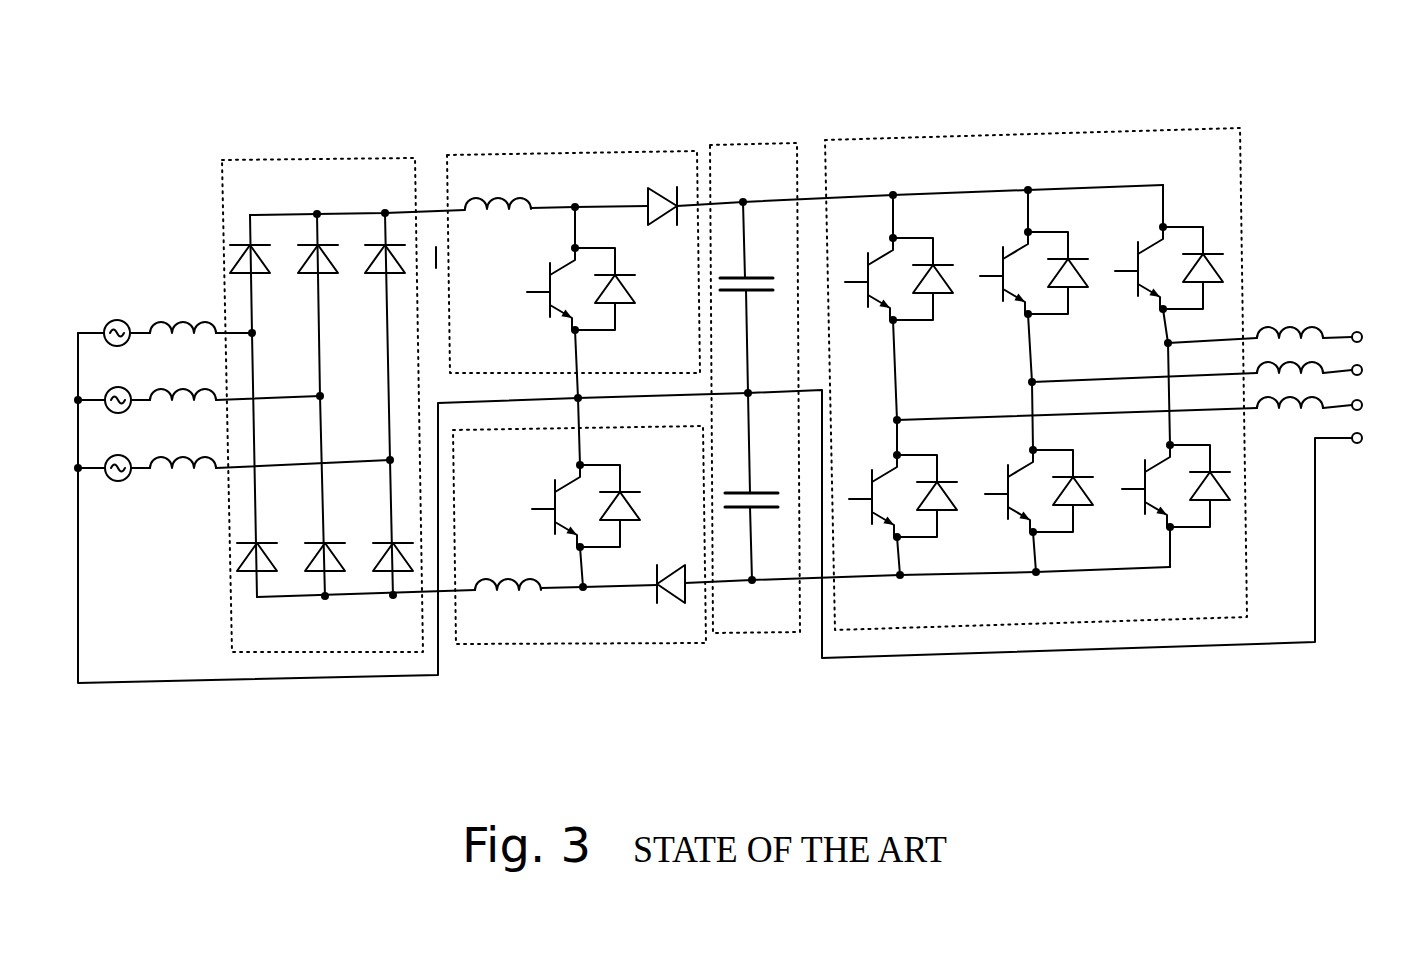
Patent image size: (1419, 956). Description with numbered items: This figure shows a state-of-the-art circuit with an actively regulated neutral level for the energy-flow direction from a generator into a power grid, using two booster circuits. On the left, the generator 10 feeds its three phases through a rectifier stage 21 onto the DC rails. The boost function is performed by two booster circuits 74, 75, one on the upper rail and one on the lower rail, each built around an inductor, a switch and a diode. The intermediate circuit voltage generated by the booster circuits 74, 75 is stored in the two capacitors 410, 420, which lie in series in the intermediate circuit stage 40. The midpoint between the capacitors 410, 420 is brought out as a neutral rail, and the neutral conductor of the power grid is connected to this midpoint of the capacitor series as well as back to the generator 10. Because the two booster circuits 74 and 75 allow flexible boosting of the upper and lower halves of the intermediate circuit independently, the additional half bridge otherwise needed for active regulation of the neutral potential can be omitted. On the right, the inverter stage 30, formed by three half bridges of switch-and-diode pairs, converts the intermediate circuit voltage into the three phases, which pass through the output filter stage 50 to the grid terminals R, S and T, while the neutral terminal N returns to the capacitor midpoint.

The generator 10 is at (117, 290).
The rectifier (diode bridge) 21 is at (356, 147).
The booster circuit 74 is at (559, 138).
The booster circuit 75 is at (571, 660).
The intermediate circuit stage 40 is at (755, 342).
The capacitor 410 is at (754, 297).
The capacitor 420 is at (756, 486).
The inverter 30 is at (964, 125).
The output filter / load terminals 50 is at (1299, 295).